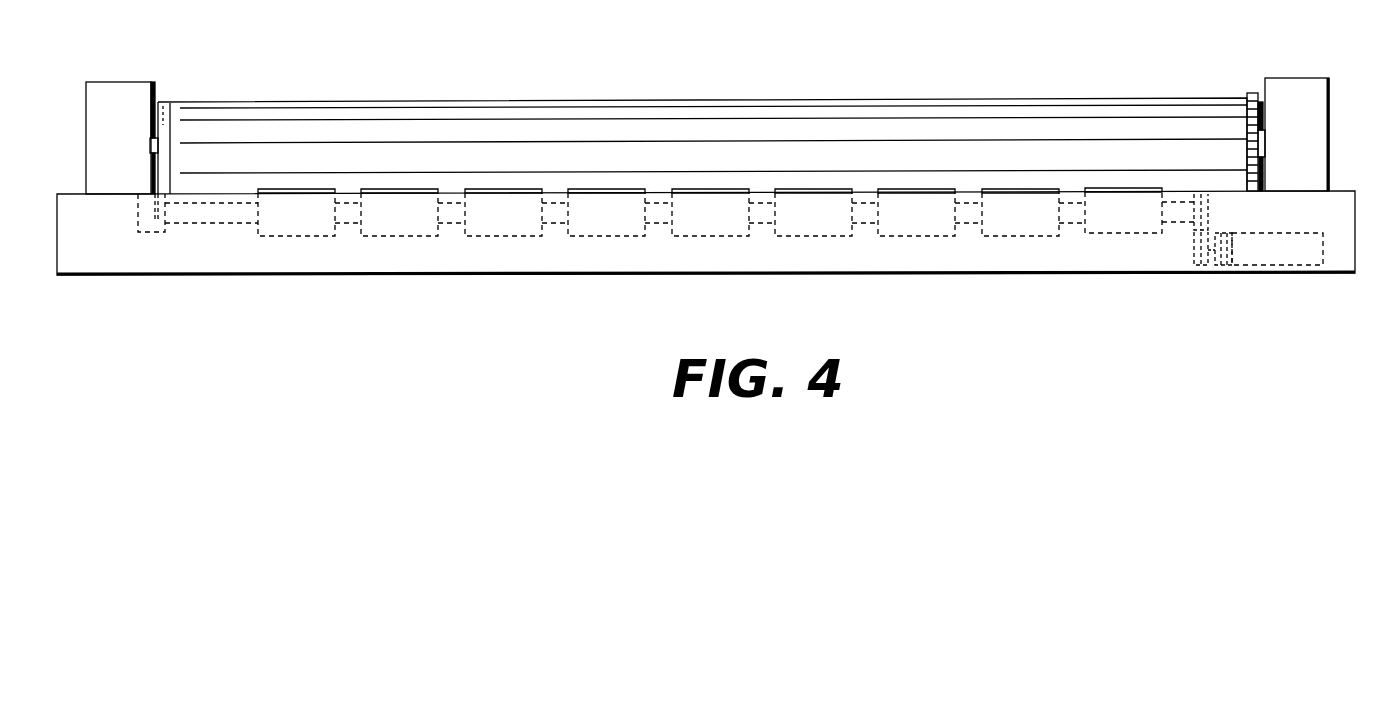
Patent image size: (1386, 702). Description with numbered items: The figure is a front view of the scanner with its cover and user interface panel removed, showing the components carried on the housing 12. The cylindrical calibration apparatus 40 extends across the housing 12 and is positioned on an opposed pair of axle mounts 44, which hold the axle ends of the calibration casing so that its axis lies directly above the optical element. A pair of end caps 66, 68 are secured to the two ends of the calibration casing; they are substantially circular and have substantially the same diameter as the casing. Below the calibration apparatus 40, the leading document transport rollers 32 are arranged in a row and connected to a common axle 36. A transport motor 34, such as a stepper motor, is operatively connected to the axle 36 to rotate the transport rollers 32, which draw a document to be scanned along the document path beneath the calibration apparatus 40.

The housing 12 is at (93, 268).
The leading document transport rollers 32 is at (322, 236).
The transport motor 34 is at (1270, 265).
The common axle 36 is at (443, 224).
The calibration apparatus 40 is at (192, 105).
The axle mounts 44 is at (110, 82).
The end cap 66 is at (166, 115).
The end cap 68 is at (1253, 108).